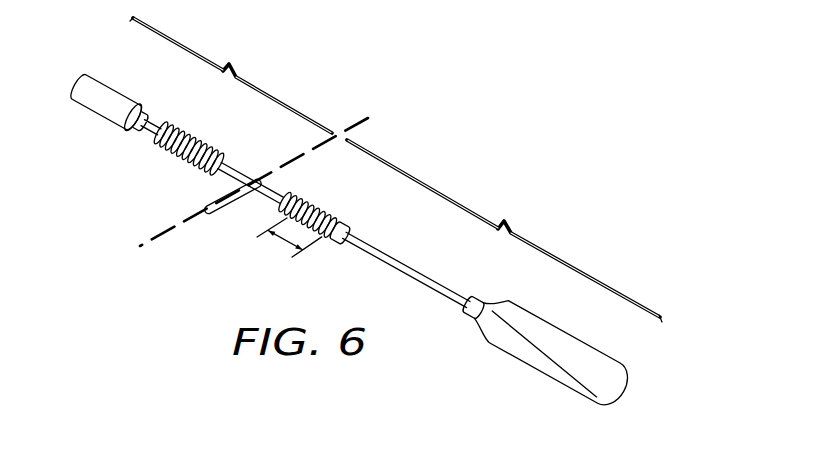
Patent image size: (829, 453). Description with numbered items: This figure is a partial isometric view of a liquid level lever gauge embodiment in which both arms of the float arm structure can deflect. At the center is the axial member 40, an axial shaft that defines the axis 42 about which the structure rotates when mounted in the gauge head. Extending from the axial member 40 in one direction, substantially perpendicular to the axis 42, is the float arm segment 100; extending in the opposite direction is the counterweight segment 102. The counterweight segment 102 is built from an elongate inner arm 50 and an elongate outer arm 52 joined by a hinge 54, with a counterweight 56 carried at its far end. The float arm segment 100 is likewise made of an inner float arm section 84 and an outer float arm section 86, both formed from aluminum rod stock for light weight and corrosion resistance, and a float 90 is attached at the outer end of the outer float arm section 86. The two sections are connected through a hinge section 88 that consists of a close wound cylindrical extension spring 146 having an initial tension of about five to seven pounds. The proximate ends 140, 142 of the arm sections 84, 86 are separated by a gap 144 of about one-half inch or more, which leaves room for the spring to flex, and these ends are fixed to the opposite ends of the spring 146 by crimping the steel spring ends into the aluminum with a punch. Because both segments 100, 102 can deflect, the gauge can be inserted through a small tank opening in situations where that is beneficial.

The axial member 40 is at (217, 192).
The axis 42 is at (350, 125).
The elongate inner arm 50 is at (234, 163).
The elongate outer arm 52 is at (146, 130).
The hinge 54 is at (158, 149).
The counterweight 56 is at (85, 72).
The inner float arm section 84 is at (281, 192).
The outer float arm section 86 is at (460, 290).
The hinge section 88 is at (343, 259).
The float 90 is at (543, 381).
The float arm segment 100 is at (504, 231).
The counterweight segment 102 is at (231, 75).
The proximate end 140 is at (312, 198).
The proximate end 142 is at (343, 218).
The gap 144 is at (283, 250).
The close wound cylindrical extension spring 146 is at (337, 210).